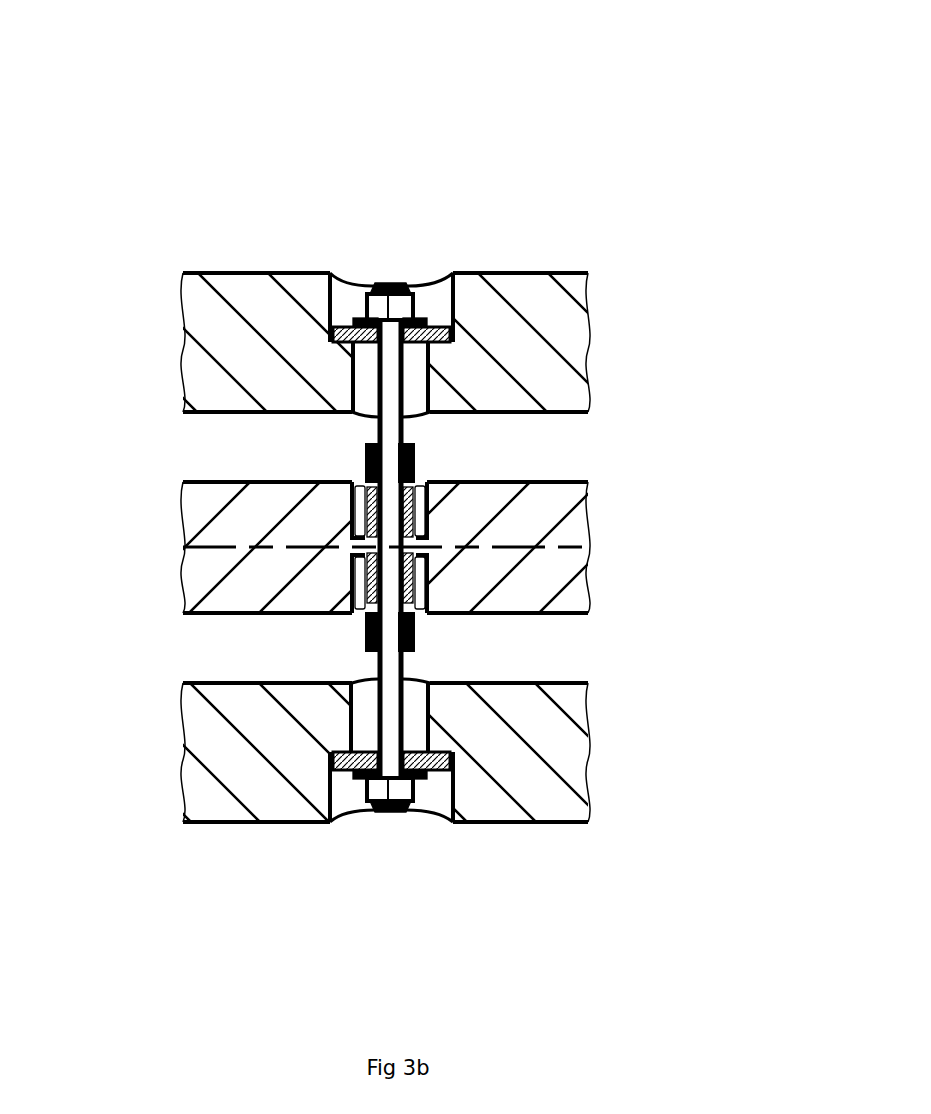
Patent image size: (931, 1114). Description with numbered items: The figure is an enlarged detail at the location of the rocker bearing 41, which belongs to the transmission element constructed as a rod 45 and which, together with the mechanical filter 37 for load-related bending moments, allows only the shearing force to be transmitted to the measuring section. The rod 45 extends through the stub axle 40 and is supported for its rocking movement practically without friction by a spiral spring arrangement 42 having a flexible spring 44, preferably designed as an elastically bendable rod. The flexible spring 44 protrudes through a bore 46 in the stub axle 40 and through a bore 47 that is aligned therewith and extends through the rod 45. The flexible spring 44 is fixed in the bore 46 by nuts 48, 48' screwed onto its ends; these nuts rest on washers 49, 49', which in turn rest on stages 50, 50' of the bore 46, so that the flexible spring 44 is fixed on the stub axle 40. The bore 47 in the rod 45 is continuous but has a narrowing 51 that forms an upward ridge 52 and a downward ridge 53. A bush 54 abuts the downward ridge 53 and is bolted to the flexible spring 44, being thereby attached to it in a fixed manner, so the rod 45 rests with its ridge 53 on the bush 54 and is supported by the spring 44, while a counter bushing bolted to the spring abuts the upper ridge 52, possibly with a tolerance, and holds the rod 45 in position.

The mechanical filter 37 is at (273, 185).
The stub axle 40 is at (117, 268).
The rocker bearing 41 is at (567, 528).
The spiral spring arrangement 42 is at (455, 640).
The flexible spring 44 is at (388, 395).
The rod 45 is at (535, 457).
The bore 46 is at (353, 372).
The bore 47 is at (350, 508).
The nut 48 is at (408, 227).
The nut 48' is at (390, 868).
The washer 49 is at (391, 240).
The washer 49' is at (521, 771).
The stage of bore 50 is at (449, 306).
The stage of bore 50' is at (336, 781).
The narrowing 51 is at (433, 547).
The upward ridge 52 is at (363, 482).
The downward ridge 53 is at (348, 575).
The bush 54 is at (413, 590).